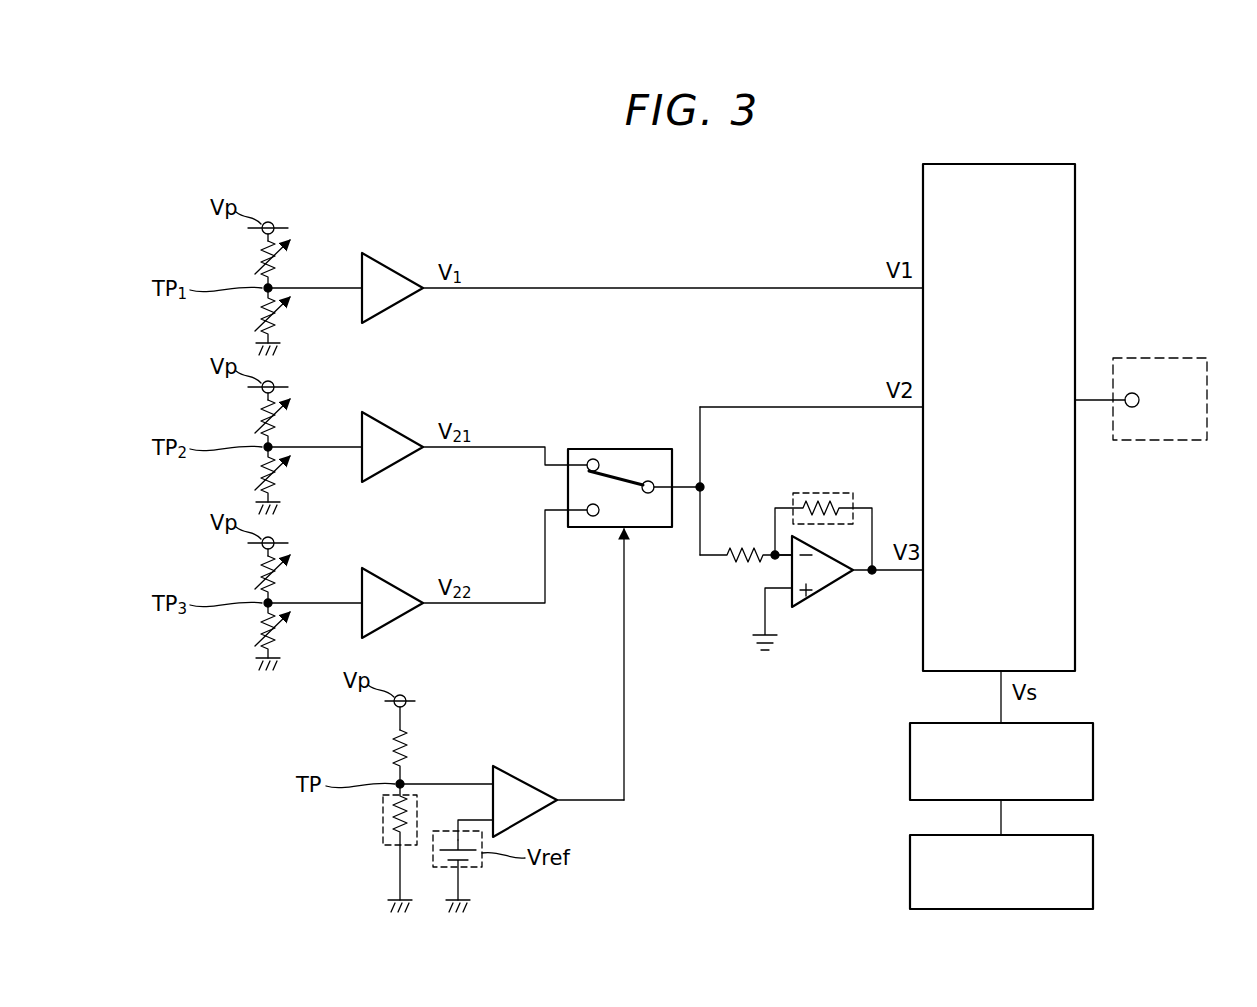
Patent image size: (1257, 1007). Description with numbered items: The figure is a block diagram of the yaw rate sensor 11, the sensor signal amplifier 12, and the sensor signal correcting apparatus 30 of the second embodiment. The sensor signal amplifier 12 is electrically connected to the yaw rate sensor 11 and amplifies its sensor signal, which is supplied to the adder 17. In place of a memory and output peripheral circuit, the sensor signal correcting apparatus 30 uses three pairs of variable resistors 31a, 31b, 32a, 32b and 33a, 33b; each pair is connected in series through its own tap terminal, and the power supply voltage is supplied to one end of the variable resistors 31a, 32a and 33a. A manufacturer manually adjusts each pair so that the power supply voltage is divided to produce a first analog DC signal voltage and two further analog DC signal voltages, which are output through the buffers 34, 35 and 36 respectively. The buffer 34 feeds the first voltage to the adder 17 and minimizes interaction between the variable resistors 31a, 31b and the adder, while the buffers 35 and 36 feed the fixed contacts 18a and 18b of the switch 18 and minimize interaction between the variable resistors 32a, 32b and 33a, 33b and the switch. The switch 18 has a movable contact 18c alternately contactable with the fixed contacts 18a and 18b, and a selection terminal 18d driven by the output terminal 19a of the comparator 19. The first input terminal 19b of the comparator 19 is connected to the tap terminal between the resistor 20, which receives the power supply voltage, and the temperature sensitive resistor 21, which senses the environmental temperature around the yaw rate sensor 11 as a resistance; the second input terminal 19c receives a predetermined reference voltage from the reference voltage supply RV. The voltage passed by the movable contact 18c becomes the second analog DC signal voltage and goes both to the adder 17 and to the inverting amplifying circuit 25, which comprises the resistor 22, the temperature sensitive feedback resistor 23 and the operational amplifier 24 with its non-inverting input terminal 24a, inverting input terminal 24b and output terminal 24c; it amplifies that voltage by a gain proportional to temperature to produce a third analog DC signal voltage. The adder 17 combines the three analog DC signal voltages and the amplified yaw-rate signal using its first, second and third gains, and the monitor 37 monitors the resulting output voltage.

The yaw rate sensor 11 is at (1093, 851).
The sensor signal amplifier 12 is at (1093, 740).
The adder 17 is at (1045, 164).
The switch 18 is at (593, 493).
The fixed contact 18a is at (593, 459).
The fixed contact 18b is at (587, 510).
The movable contact 18c is at (649, 494).
The selection terminal 18d is at (621, 533).
The comparator 19 is at (540, 786).
The output terminal 19a is at (598, 804).
The first input terminal 19b is at (491, 780).
The second input terminal 19c is at (490, 820).
The resistor 20 is at (392, 752).
The temperature sensitive resistor 21 is at (382, 822).
The resistor 22 is at (750, 548).
The temperature sensitive resistor 23 is at (848, 493).
The operational amplifier 24 is at (817, 612).
The non-inverting input terminal 24a is at (779, 598).
The inverting input terminal 24b is at (784, 560).
The output terminal 24c is at (860, 578).
The inverting amplifying circuit 25 is at (812, 652).
The sensor signal correcting apparatus 30 is at (532, 241).
The variable resistor 31a is at (262, 256).
The variable resistor 31b is at (262, 322).
The variable resistor 32a is at (262, 415).
The variable resistor 32b is at (262, 481).
The variable resistor 33a is at (262, 571).
The variable resistor 33b is at (262, 637).
The buffer 34 is at (384, 271).
The buffer 35 is at (384, 430).
The buffer 36 is at (384, 586).
The monitor 37 is at (1185, 358).
The reference voltage supply RV is at (480, 870).